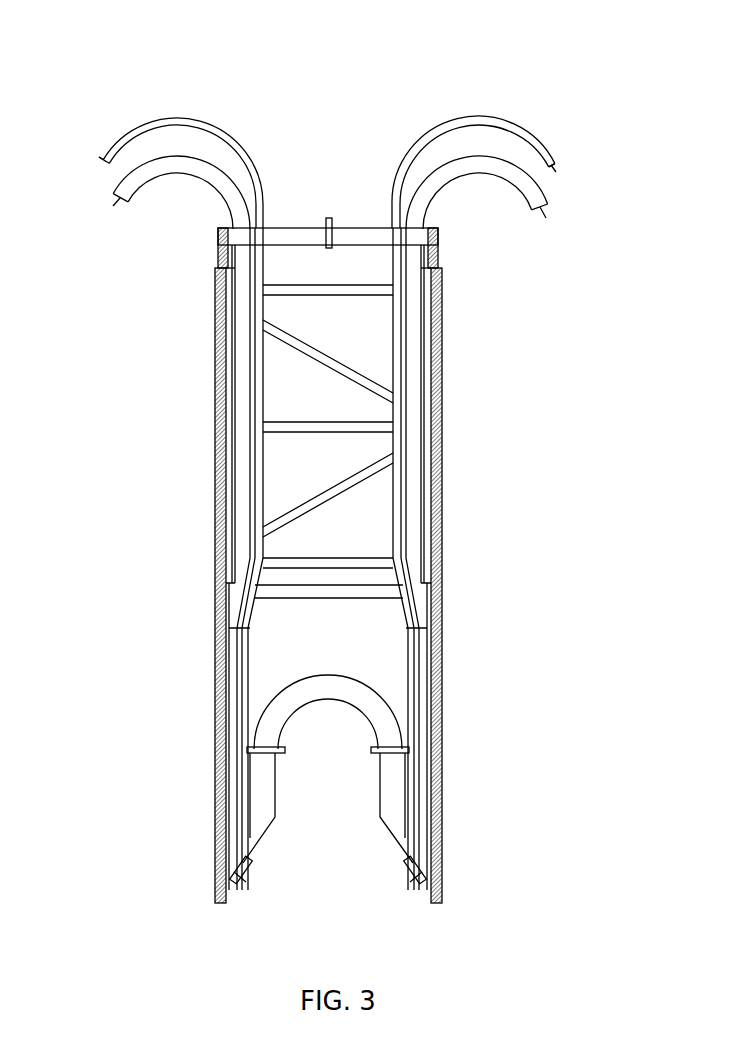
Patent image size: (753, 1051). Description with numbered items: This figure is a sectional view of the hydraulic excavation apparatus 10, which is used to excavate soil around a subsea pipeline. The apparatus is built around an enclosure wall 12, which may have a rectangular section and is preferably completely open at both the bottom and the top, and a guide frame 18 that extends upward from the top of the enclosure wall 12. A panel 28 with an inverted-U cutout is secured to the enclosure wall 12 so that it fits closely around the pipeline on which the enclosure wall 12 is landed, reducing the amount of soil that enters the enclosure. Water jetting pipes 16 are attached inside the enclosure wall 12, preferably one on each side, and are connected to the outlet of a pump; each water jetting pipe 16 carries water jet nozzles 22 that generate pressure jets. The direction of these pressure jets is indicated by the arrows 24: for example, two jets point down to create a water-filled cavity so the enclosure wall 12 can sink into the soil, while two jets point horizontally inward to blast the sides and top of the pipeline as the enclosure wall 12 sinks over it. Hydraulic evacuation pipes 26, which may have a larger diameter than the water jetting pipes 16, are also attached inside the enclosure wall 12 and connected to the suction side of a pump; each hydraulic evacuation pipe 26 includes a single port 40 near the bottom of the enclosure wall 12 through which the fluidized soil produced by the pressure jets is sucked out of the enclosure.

The hydraulic excavation apparatus 10 is at (270, 55).
The enclosure wall 12 is at (215, 707).
The water jetting pipes 16 is at (528, 128).
The guide frame 18 is at (213, 460).
The water jet nozzles 22 is at (283, 748).
The arrows 24 is at (377, 753).
The hydraulic evacuation pipes 26 is at (543, 192).
The panels 28 is at (375, 685).
The port 40 is at (328, 891).